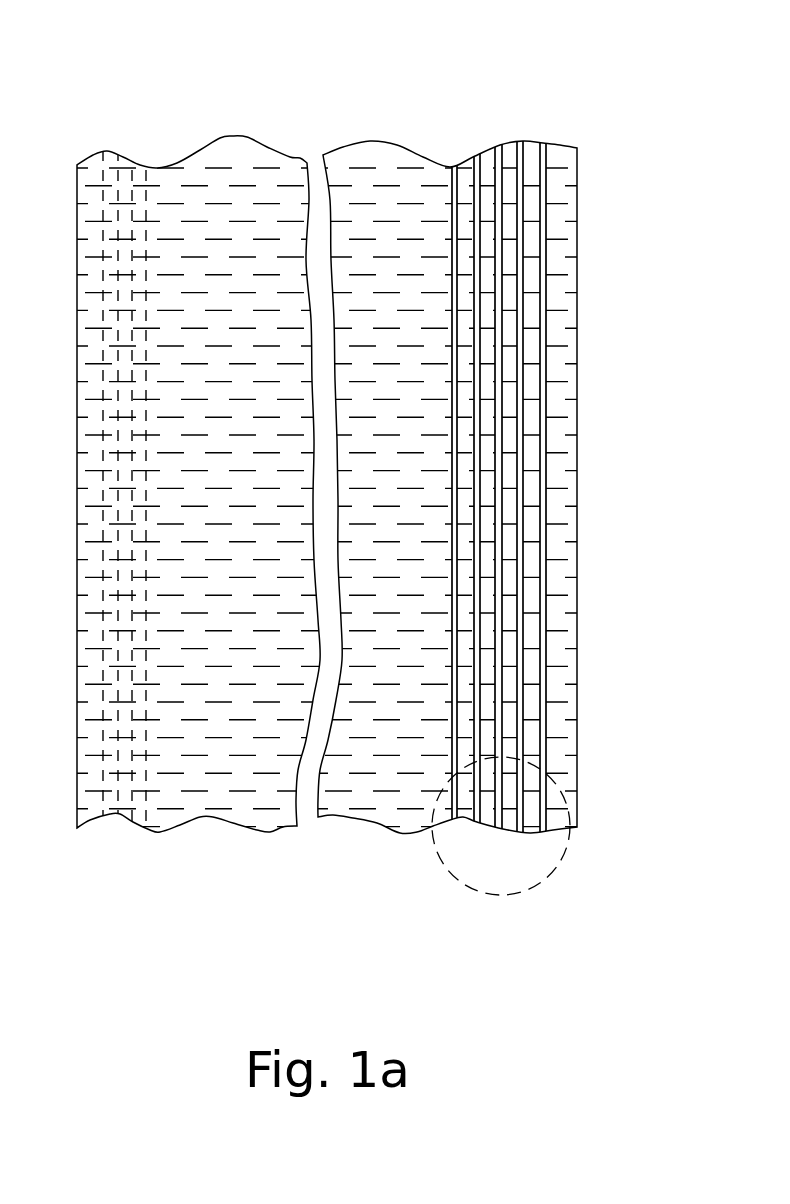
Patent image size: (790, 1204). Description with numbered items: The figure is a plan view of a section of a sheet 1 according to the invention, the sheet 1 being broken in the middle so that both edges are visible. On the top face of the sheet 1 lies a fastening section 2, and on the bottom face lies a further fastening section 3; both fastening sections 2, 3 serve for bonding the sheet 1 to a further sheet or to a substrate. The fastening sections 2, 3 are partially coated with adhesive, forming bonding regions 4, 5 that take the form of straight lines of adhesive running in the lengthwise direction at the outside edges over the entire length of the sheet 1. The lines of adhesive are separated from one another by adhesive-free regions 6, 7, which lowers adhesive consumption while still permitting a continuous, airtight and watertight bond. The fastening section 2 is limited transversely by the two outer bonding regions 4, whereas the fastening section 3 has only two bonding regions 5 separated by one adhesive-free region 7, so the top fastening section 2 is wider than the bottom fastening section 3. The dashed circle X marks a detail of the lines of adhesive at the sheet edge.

The sheet 1 is at (357, 777).
The fastening section 2 is at (524, 855).
The further fastening section 3 is at (106, 831).
The bonding regions 4 is at (455, 163).
The bonding regions 5 is at (104, 163).
The adhesive-free regions 6 is at (463, 810).
The adhesive-free region 7 is at (122, 817).
The detail region X is at (553, 779).